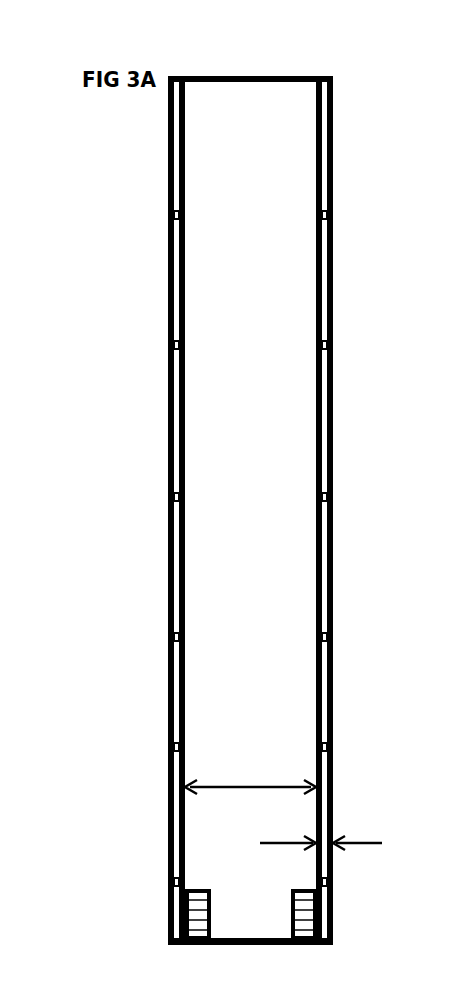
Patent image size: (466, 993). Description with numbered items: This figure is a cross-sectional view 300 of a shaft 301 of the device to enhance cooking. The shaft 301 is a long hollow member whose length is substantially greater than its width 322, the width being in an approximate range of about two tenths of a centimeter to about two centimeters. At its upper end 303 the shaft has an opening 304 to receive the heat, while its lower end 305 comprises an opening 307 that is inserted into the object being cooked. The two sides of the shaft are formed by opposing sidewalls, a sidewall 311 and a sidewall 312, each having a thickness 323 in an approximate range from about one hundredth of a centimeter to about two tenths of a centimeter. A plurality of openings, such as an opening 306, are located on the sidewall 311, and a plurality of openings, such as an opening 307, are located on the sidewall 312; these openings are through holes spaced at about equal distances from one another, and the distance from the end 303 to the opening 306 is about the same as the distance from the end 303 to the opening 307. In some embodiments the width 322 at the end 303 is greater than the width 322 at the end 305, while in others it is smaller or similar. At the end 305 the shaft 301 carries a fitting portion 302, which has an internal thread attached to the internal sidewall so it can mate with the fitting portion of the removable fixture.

The cross-sectional view 300 is at (78, 138).
The shaft 301 is at (152, 372).
The fitting portion 302 is at (305, 944).
The end 303 is at (300, 78).
The opening 304 is at (266, 98).
The end 305 is at (187, 944).
The opening 306 is at (343, 637).
The opening 307 is at (168, 639).
The sidewall 311 is at (333, 328).
The sidewall 312 is at (168, 310).
The width 322 is at (200, 786).
The thickness 323 is at (380, 843).